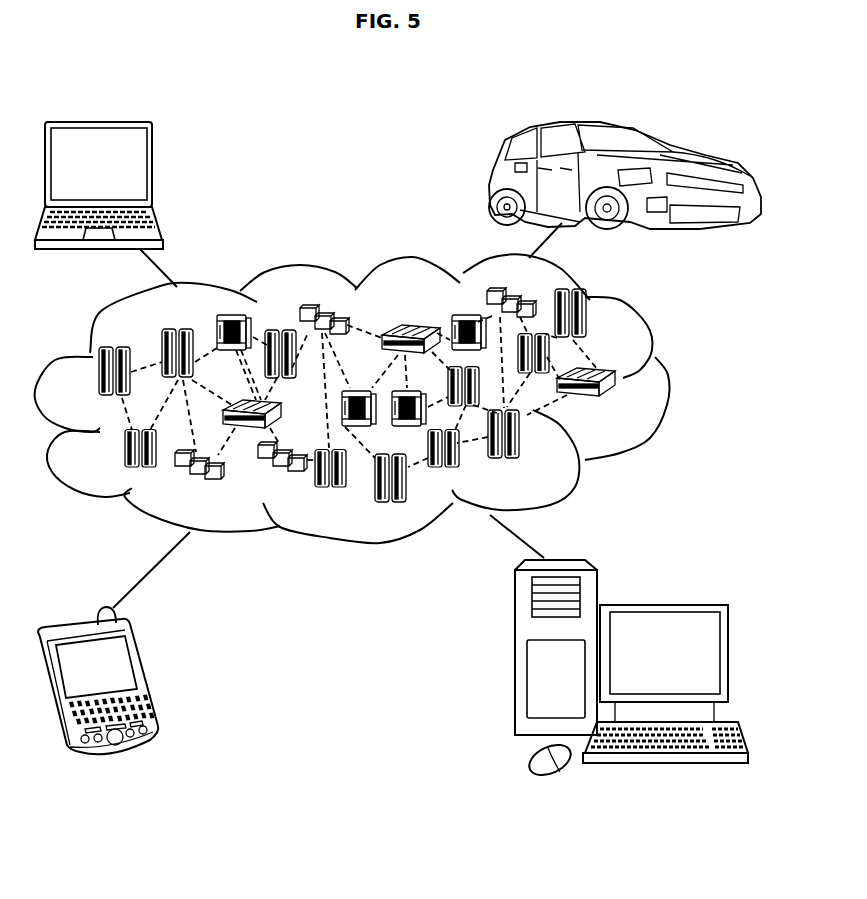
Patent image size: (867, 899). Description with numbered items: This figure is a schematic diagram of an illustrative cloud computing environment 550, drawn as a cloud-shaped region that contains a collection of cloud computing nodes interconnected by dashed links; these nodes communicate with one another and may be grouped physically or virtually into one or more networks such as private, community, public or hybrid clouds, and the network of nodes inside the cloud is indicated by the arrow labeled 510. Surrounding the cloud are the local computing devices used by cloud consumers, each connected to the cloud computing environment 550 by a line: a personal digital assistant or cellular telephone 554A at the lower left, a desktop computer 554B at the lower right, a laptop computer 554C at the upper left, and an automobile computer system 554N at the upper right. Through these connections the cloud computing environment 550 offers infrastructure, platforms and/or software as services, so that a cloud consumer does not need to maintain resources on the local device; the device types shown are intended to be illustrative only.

The network 510 is at (617, 404).
The cloud computing environment 550 is at (662, 378).
The personal digital assistant or cellular telephone 554A is at (143, 677).
The desktop computer 554B is at (662, 601).
The laptop computer 554C is at (152, 171).
The automobile computer system 554N is at (490, 182).